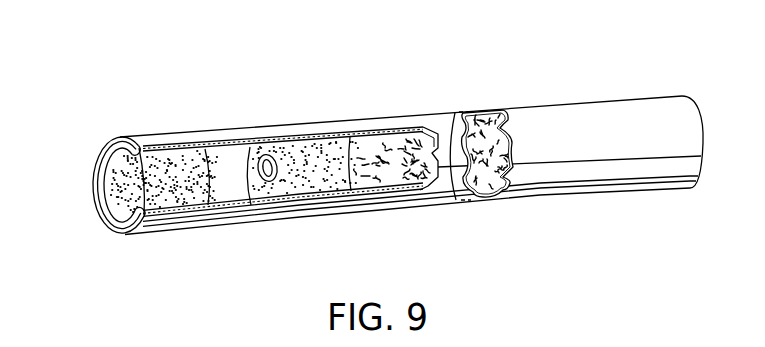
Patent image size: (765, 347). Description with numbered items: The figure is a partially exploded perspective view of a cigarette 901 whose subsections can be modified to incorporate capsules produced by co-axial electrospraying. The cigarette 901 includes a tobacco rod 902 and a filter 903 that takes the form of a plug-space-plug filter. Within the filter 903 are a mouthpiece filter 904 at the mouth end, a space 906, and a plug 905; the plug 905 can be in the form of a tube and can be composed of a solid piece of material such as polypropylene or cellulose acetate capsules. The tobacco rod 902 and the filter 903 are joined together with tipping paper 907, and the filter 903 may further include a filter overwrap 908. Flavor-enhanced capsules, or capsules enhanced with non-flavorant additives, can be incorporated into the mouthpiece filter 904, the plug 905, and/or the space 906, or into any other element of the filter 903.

The cigarette 901 is at (291, 104).
The tobacco rod 902 is at (587, 108).
The filter 903 is at (186, 124).
The mouthpiece filter 904 is at (104, 146).
The plug 905 is at (323, 186).
The space 906 is at (217, 182).
The tipping paper 907 is at (372, 121).
The filter overwrap 908 is at (116, 234).